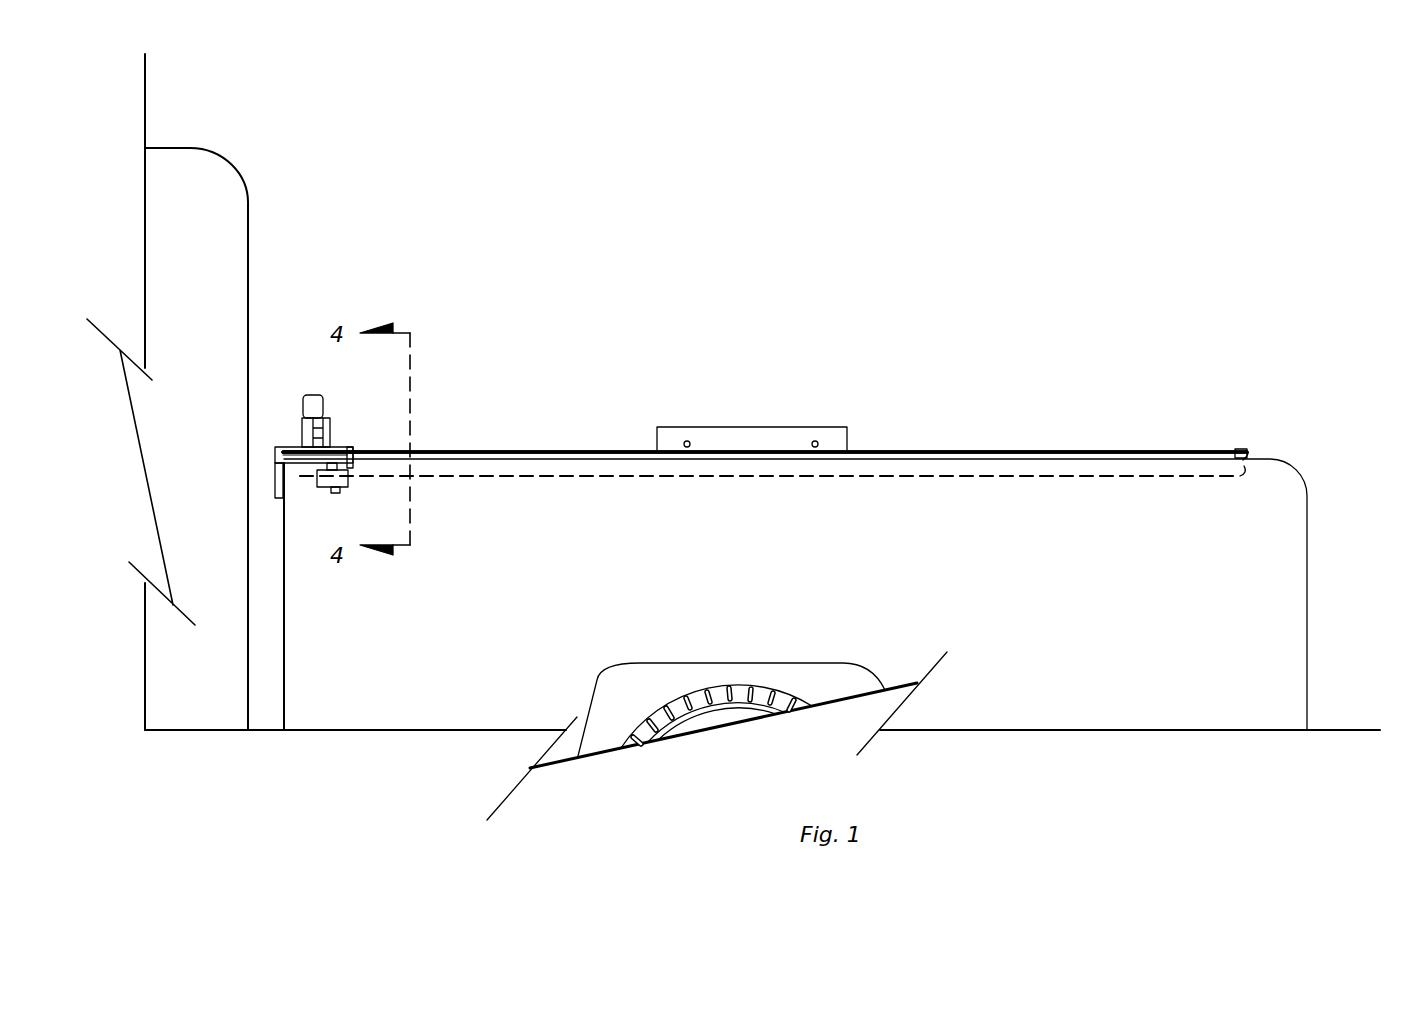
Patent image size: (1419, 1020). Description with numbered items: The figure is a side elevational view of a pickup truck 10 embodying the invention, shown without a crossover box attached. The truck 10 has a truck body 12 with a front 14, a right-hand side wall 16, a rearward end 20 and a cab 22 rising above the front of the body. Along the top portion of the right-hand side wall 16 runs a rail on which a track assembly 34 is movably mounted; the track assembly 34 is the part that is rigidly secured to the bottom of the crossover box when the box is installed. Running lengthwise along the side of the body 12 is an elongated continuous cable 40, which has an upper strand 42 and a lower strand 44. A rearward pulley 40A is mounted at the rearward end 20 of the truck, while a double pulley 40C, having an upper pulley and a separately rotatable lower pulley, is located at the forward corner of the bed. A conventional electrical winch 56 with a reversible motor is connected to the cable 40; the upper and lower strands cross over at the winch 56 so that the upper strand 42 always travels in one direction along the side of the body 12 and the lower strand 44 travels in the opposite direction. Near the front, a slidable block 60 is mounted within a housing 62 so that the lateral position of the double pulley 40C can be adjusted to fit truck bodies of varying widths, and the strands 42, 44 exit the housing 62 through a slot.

The truck 10 is at (732, 295).
The truck body 12 is at (1092, 617).
The front 14 is at (285, 604).
The right-hand side wall 16 is at (523, 464).
The rearward end 20 is at (1307, 571).
The cab 22 is at (248, 243).
The track assembly 34 is at (735, 427).
The cable 40 is at (1114, 450).
The rearward pulley 40A is at (1240, 446).
The double pulley 40C is at (322, 469).
The upper strand 42 is at (1062, 451).
The lower strand 44 is at (1042, 479).
The winch 56 is at (312, 395).
The slidable block 60 is at (340, 490).
The housing 62 is at (291, 447).